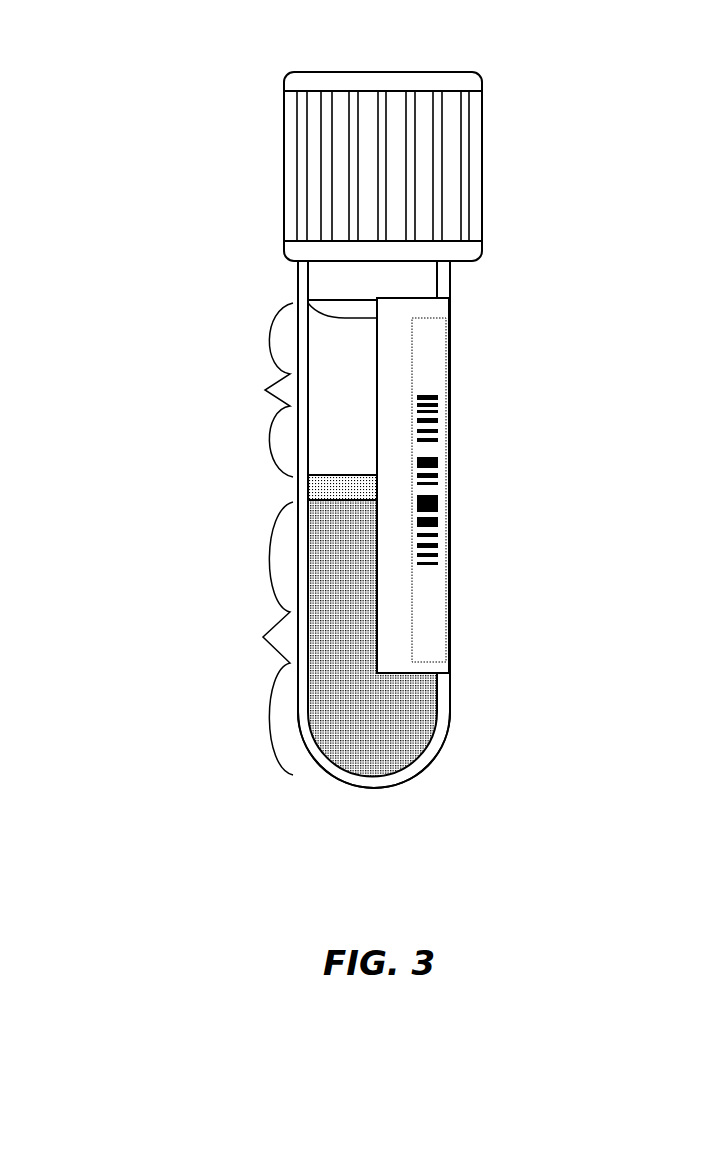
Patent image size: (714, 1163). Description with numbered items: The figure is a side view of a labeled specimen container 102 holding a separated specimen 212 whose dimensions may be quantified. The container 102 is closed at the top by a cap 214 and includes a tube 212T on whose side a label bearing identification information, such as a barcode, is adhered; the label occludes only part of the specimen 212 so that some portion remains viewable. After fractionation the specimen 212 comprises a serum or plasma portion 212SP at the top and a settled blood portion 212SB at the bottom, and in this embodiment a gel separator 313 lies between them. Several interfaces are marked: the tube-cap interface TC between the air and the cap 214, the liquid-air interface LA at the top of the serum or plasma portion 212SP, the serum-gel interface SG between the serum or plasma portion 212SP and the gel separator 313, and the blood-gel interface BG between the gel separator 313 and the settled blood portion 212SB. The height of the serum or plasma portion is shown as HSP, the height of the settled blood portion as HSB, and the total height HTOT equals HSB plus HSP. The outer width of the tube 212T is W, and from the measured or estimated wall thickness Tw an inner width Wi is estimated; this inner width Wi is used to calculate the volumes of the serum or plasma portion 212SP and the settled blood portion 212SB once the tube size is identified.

The specimen container 102 is at (336, 400).
The specimen 212 is at (336, 506).
The cap 214 is at (416, 72).
The gel separator 313 is at (345, 474).
The tube 212T is at (450, 686).
The serum or plasma portion 212SP is at (265, 390).
The settled blood portion 212SB is at (263, 637).
The tube-cap interface TC is at (275, 261).
The liquid-air interface LA is at (294, 302).
The serum-gel interface SG is at (294, 477).
The blood-gel interface BG is at (294, 502).
The total height HTOT is at (320, 777).
The height of the serum or plasma portion HSP is at (146, 320).
The height of the settled blood portion HSB is at (146, 520).
The inner width Wi is at (327, 280).
The wall thickness Tw is at (467, 280).
The width of the tube W is at (302, 747).